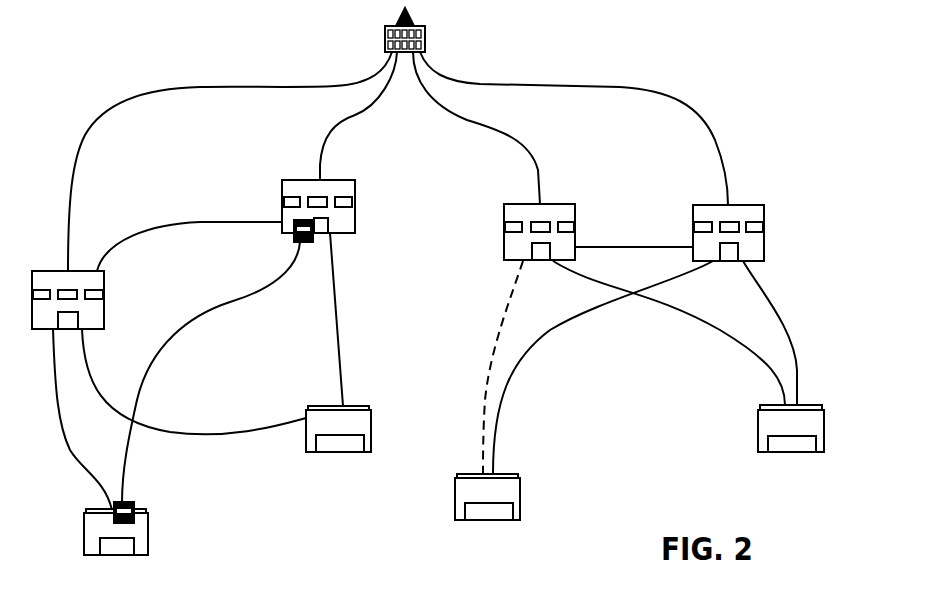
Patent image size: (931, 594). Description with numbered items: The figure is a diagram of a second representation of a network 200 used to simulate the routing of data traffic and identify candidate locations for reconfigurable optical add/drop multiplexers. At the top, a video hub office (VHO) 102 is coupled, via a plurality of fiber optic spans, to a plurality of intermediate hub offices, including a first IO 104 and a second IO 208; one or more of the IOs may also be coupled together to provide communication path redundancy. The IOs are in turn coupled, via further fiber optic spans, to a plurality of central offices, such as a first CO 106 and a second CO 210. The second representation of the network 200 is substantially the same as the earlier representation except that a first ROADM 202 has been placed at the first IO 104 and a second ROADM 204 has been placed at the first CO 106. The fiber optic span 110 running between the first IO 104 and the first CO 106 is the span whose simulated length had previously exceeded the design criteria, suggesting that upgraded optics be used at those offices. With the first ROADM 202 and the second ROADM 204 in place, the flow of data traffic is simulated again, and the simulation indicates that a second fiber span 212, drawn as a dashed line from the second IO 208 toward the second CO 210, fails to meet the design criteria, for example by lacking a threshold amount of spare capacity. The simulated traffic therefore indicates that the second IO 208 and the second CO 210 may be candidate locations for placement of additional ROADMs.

The video hub office (VHO) 102 is at (387, 30).
The first intermediate hub office (IO) 104 is at (282, 179).
The first central office (CO) 106 is at (85, 512).
The fiber optic span 110 is at (233, 302).
The second representation of the network 200 is at (784, 63).
The first reconfigurable optical add/drop multiplexer (ROADM) 202 is at (297, 241).
The second reconfigurable optical add/drop multiplexer (ROADM) 204 is at (136, 507).
The second intermediate hub office (IO) 208 is at (510, 203).
The second central office (CO) 210 is at (473, 522).
The second fiber span 212 is at (495, 347).